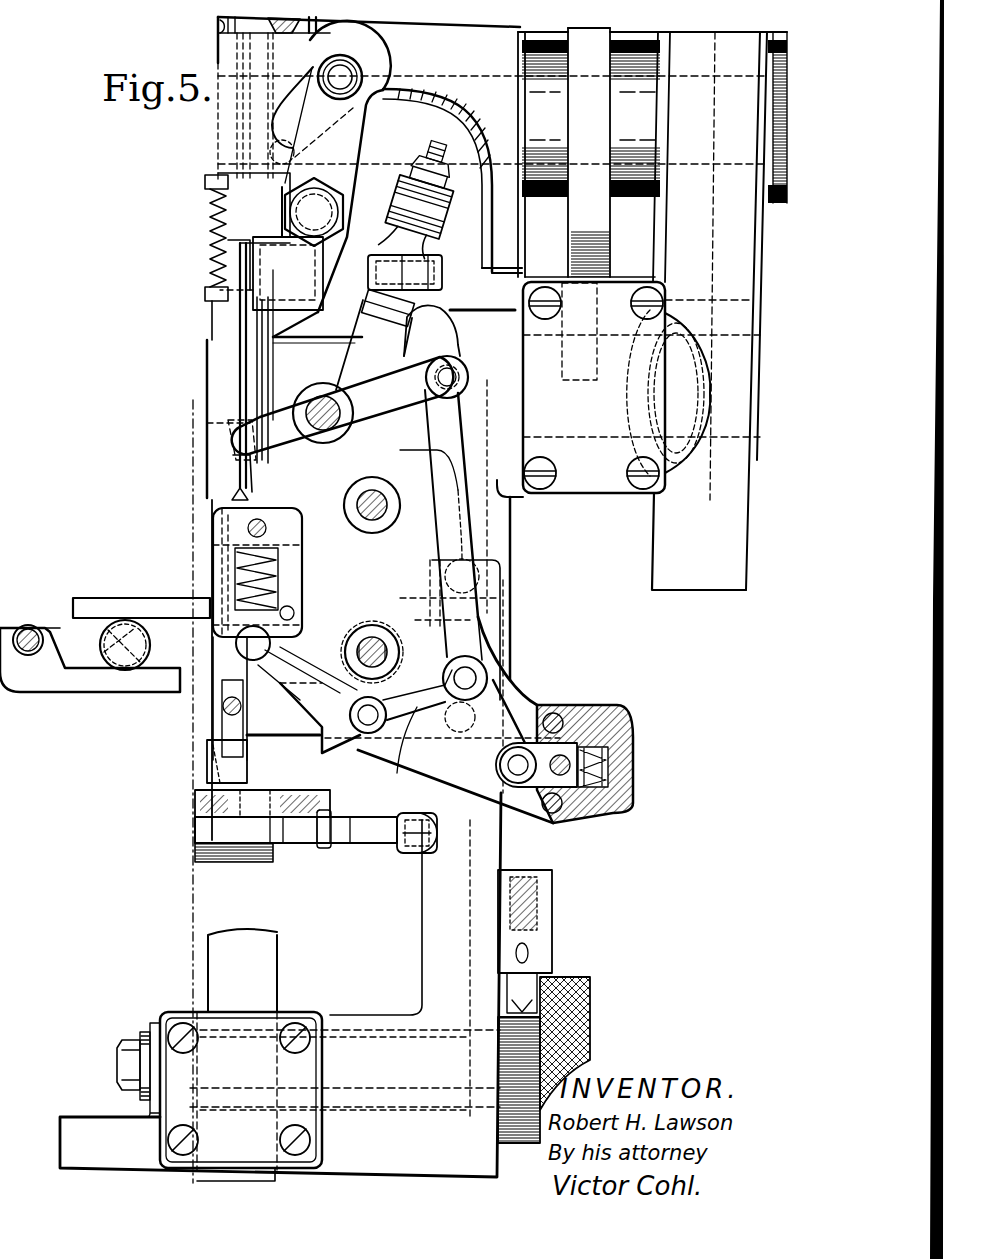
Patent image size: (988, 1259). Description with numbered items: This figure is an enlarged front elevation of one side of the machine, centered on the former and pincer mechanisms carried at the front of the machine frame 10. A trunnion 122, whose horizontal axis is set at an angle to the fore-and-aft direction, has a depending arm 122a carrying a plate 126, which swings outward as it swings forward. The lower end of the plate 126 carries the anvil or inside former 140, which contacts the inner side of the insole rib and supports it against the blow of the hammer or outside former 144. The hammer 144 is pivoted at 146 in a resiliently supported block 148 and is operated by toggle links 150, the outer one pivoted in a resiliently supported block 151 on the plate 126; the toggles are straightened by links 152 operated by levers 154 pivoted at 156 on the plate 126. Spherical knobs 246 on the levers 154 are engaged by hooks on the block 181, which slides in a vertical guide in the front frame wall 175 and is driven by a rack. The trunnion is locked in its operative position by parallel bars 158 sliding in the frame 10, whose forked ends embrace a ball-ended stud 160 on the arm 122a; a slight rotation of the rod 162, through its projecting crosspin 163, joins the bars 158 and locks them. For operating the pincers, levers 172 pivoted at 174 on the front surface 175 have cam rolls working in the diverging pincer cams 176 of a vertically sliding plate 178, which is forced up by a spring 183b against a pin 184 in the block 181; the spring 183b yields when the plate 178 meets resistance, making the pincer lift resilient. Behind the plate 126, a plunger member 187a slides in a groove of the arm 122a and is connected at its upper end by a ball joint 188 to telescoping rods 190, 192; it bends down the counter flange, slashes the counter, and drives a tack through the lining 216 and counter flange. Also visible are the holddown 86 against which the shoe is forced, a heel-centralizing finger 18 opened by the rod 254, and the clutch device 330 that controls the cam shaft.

The machine frame 10 is at (503, 856).
The centralizing fingers 18 is at (333, 836).
The holddown 86 is at (200, 760).
The trunnion 122 is at (604, 440).
The depending arm 122a is at (520, 392).
The plate 126 is at (305, 494).
The anvil 140 is at (235, 770).
The hammer 144 is at (345, 752).
The pivot 146 is at (300, 626).
The resiliently supported block 148 is at (270, 617).
The toggle links 150 is at (420, 745).
The resiliently supported block 151 is at (567, 740).
The links 152 is at (465, 532).
The levers 154 is at (350, 405).
The pivot 156 is at (326, 422).
The parallel bars 158 is at (151, 600).
The ball-ended studs 160 is at (30, 630).
The rod 162 is at (135, 660).
The crosspin 163 is at (100, 650).
The levers 172 is at (350, 148).
The pivot 174 is at (328, 211).
The vertical front surface 175 is at (420, 52).
The pincer cams 176 is at (293, 110).
The vertically sliding plate 178 is at (225, 50).
The block 181 is at (213, 358).
The spring 183b is at (215, 287).
The pin 184 is at (220, 27).
The plunger member 187a is at (365, 346).
The ball joint 188 is at (430, 255).
The telescoping rod 190 is at (356, 262).
The telescoping rod 192 is at (276, 282).
The lining 216 is at (432, 64).
The spherical knob 246 is at (246, 468).
The rod 254 is at (423, 848).
The clutch device 330 is at (605, 262).